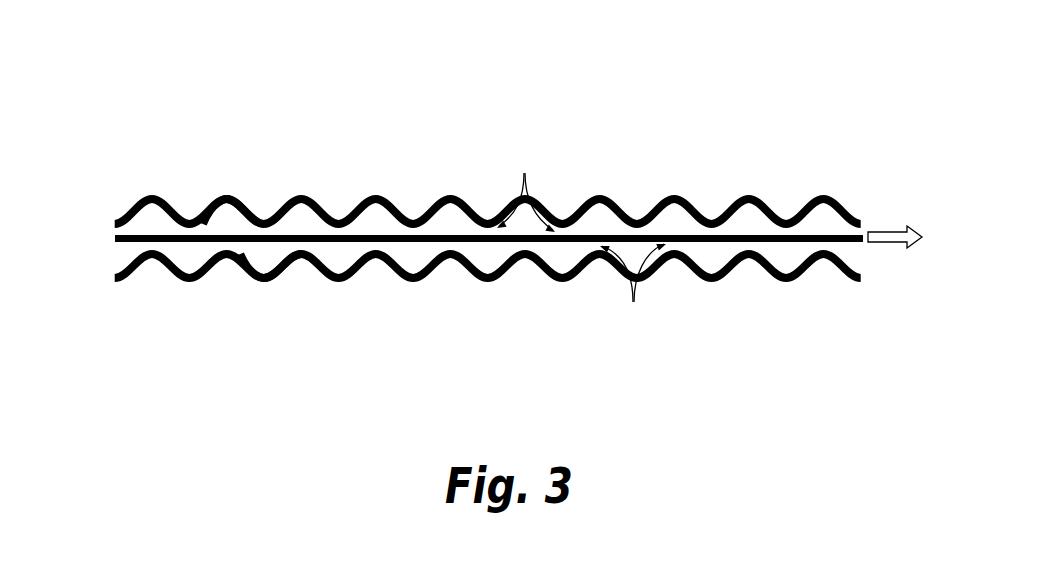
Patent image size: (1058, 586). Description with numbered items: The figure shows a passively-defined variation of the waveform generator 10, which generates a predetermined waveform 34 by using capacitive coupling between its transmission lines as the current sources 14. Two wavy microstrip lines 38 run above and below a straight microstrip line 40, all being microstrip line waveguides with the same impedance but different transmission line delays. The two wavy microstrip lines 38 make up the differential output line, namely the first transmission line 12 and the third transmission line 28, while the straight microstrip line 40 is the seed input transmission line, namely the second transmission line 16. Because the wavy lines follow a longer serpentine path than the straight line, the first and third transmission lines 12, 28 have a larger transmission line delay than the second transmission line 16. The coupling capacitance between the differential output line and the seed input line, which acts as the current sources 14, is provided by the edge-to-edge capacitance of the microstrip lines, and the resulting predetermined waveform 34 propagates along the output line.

The waveform generator 10 is at (727, 71).
The first transmission line 12 is at (750, 200).
The current sources 14 is at (581, 239).
The second transmission line 16 is at (113, 238).
The third transmission line 28 is at (863, 271).
The predetermined waveform 34 is at (888, 229).
The wavy microstrip lines 38 is at (227, 205).
The straight microstrip line 40 is at (313, 235).